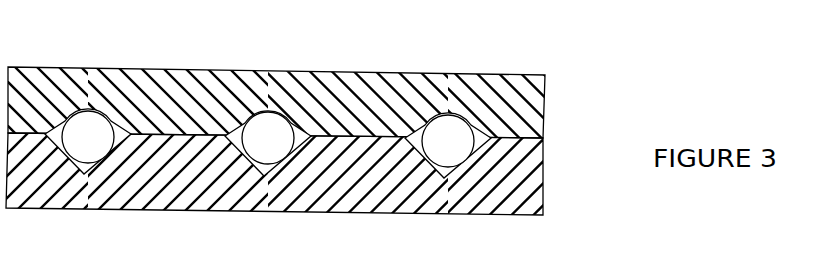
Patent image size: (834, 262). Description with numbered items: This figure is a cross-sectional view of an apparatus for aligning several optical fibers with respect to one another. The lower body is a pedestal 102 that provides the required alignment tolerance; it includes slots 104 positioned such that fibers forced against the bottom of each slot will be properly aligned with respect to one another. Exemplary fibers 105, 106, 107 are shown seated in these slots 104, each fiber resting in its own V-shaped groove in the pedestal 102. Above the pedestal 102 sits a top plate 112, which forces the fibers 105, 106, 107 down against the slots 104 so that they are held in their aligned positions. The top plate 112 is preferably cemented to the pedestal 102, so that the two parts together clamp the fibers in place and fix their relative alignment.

The pedestal 102 is at (545, 160).
The slots 104 is at (446, 174).
The optical fiber 105 is at (88, 117).
The optical fiber 106 is at (270, 119).
The optical fiber 107 is at (443, 122).
The top plate 112 is at (545, 128).